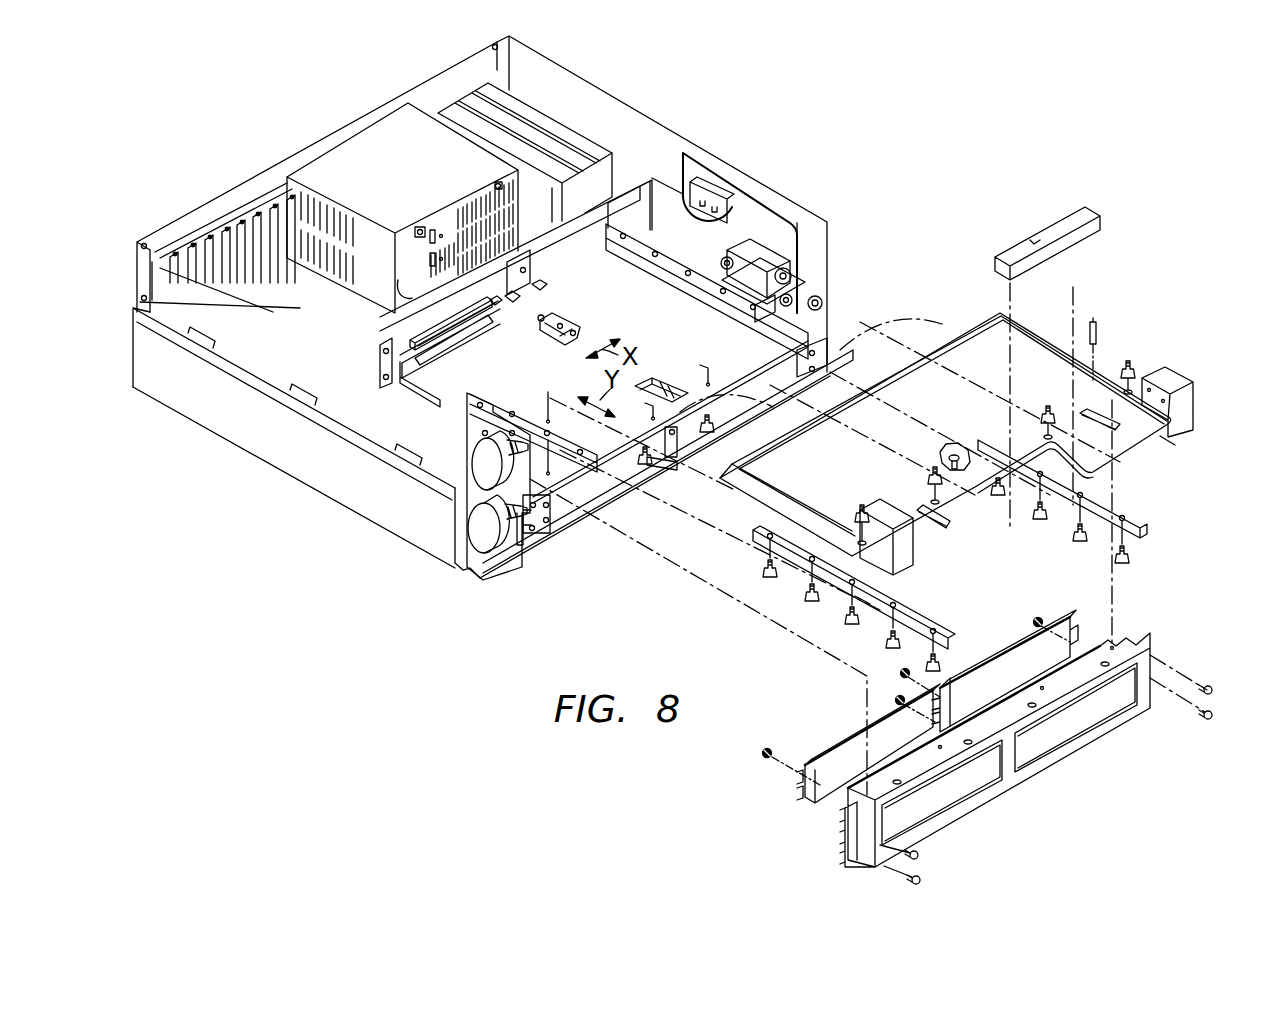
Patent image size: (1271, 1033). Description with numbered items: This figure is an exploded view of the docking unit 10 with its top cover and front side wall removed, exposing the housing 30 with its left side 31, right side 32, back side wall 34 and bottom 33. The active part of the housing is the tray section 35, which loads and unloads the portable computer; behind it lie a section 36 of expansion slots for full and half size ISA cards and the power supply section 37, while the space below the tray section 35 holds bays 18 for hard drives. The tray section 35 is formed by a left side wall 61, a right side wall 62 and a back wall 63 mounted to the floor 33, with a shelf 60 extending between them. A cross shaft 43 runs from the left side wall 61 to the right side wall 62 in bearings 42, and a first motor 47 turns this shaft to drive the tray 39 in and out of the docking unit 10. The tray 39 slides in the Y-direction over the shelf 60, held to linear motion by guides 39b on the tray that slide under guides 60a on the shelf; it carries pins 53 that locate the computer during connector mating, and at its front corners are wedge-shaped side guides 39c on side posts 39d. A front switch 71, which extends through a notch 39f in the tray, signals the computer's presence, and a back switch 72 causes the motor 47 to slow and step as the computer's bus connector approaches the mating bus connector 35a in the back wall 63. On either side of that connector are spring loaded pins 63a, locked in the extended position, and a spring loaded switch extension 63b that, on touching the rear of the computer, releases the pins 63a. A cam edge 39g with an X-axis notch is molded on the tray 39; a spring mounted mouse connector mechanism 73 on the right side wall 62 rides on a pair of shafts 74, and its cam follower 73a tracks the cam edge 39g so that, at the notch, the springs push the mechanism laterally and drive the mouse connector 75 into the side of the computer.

The docking unit 10 is at (228, 505).
The bays 18 is at (846, 368).
The housing 30 is at (346, 510).
The left side 31 is at (208, 415).
The right side 32 is at (600, 92).
The bottom 33 is at (627, 482).
The back side wall 34 is at (324, 136).
The tray section 35 is at (585, 380).
The bus connector 35a is at (440, 333).
The section of expansion slots 36 is at (272, 286).
The power supply section 37 is at (370, 294).
The tray 39 is at (1137, 470).
The guides 39b is at (1105, 520).
The side guides 39c is at (1088, 408).
The side posts 39d is at (1194, 408).
The notch 39f is at (980, 497).
The cam edge 39g is at (1030, 324).
The bearings 42 is at (537, 533).
The cross shaft 43 is at (519, 547).
The first motor 47 is at (480, 548).
The pins 53 is at (1158, 433).
The shelf 60 is at (595, 312).
The guides 60a is at (672, 280).
The left side wall 61 is at (467, 405).
The right side wall 62 is at (708, 162).
The back wall 63 is at (628, 208).
The pins 63a is at (500, 315).
The spring loaded extension 63b is at (538, 288).
The front switch 71 is at (664, 392).
The back switch 72 is at (590, 328).
The mouse connector mechanism 73 is at (758, 258).
The cam follower 73a is at (1093, 324).
The shafts 74 is at (732, 258).
The mouse connector 75 is at (728, 290).